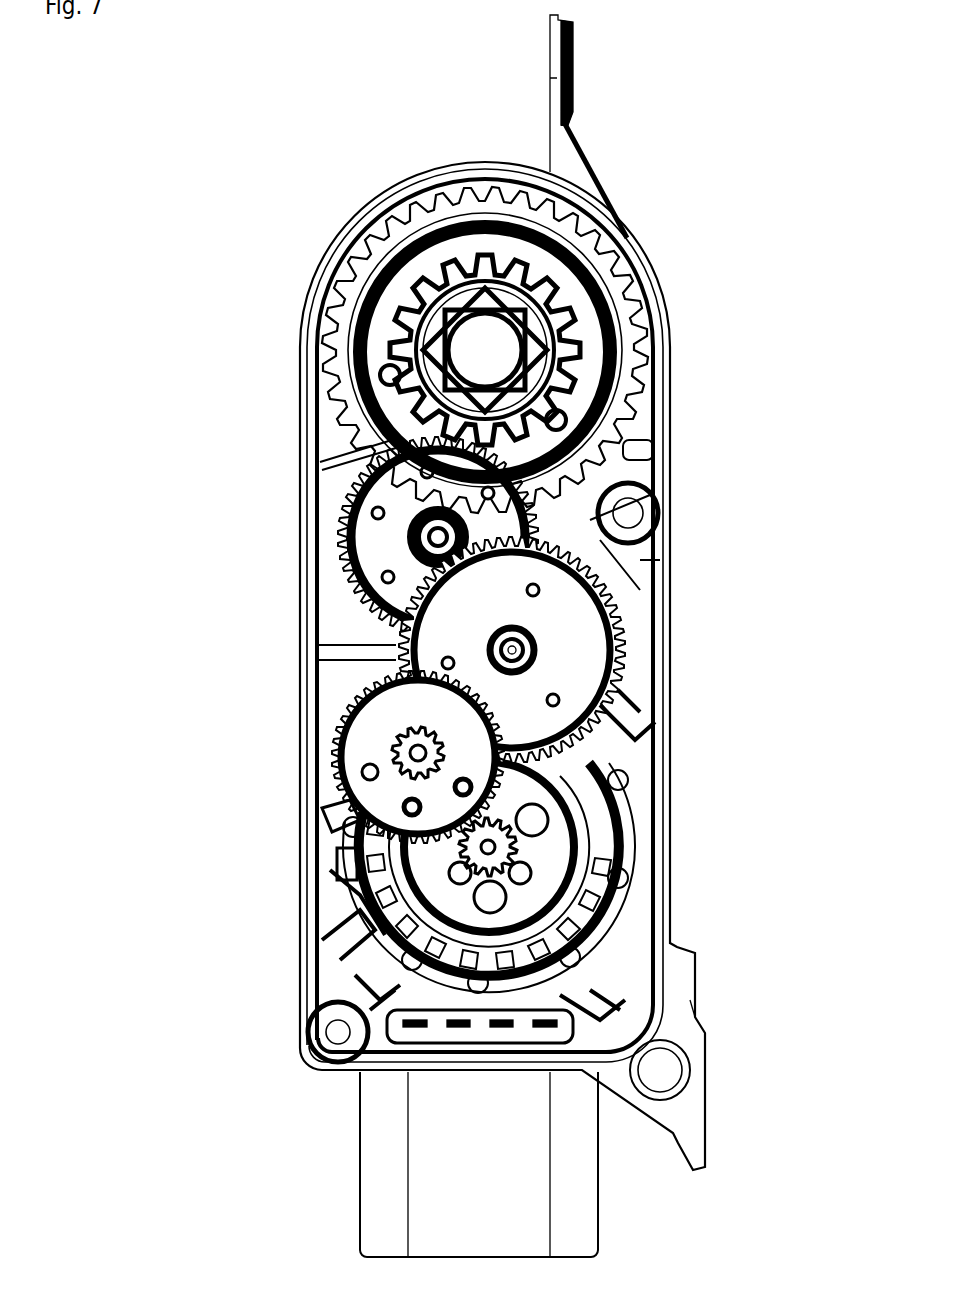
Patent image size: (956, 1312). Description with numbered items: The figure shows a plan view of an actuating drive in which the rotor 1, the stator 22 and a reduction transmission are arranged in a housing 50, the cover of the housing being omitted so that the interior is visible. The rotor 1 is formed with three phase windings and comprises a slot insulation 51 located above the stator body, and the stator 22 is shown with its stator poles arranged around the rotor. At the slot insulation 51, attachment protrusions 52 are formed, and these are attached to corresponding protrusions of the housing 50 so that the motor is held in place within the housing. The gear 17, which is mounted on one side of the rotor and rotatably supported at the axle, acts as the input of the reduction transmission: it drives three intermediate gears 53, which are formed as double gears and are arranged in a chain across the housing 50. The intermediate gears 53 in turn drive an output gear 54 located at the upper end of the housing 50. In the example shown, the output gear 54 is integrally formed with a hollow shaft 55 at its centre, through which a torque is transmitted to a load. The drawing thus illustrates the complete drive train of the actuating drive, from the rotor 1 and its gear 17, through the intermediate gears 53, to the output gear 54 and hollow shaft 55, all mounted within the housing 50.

The rotor 1 is at (633, 920).
The gear 17 is at (490, 847).
The stator 22 is at (318, 815).
The housing 50 is at (306, 386).
The slot insulation 51 is at (365, 898).
The attachment protrusions 52 is at (633, 703).
The intermediate gears 53 is at (385, 702).
The output gear 54 is at (622, 237).
The hollow shaft 55 is at (467, 337).